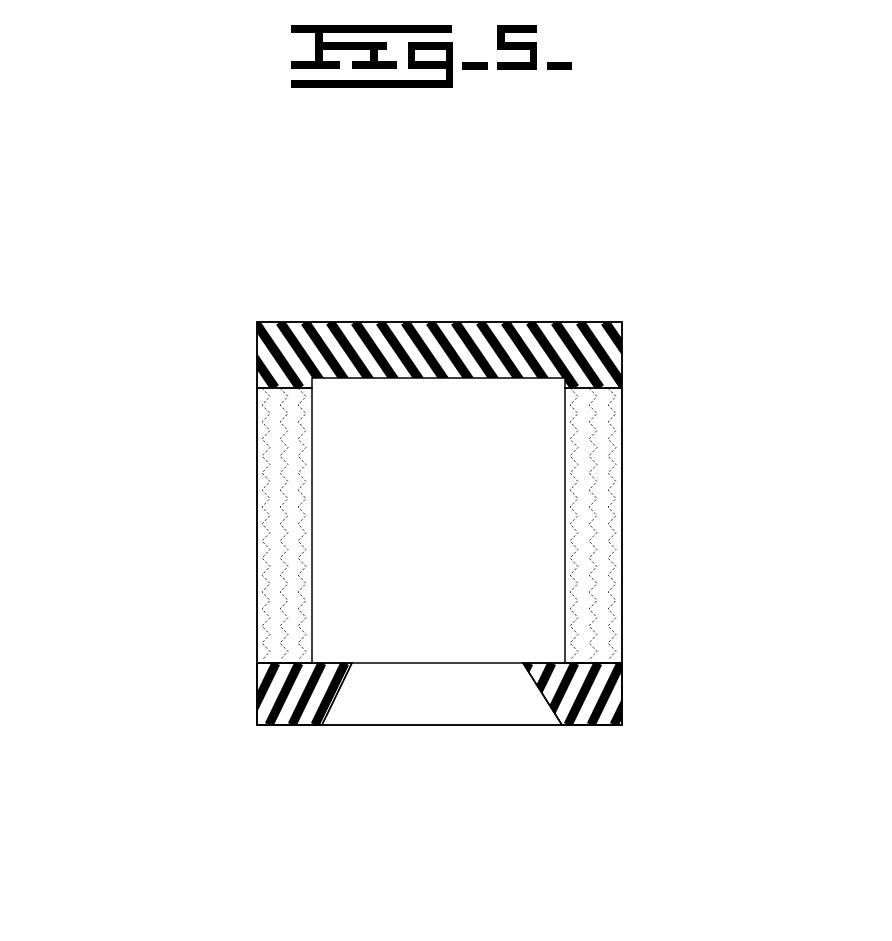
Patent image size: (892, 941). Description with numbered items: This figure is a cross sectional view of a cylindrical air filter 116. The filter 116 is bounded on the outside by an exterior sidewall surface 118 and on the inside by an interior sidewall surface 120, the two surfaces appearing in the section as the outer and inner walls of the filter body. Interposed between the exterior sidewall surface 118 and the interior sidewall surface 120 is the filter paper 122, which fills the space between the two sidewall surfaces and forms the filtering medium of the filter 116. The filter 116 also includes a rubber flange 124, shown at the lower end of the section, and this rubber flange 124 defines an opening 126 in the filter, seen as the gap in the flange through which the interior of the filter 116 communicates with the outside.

The cylindrical filter 116 is at (215, 268).
The exterior sidewall surface 118 is at (622, 590).
The interior sidewall surface 120 is at (568, 416).
The filter paper 122 is at (283, 483).
The rubber flange 124 is at (622, 698).
The opening 126 is at (312, 718).